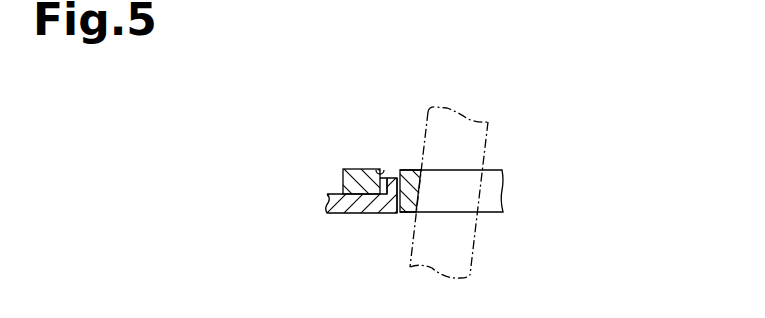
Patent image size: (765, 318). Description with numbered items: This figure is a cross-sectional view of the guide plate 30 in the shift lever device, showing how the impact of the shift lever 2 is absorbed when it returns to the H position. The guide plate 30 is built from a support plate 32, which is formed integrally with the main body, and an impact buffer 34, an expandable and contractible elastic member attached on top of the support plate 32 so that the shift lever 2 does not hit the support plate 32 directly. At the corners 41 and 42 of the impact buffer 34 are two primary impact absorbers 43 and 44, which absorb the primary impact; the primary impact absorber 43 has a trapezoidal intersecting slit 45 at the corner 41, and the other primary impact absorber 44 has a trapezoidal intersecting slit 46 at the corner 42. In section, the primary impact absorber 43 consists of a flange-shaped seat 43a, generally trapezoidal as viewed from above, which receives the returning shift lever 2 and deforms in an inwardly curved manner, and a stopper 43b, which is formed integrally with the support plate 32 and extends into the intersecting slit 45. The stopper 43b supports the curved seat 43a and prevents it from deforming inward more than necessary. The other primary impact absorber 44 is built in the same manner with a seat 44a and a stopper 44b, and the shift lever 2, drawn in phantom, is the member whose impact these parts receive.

The shift lever 2 is at (467, 117).
The guide plate 30 is at (346, 181).
The support plate 32 is at (333, 194).
The impact buffer 34 is at (350, 168).
The corner 41 is at (483, 208).
The corner 42 is at (418, 193).
The primary impact absorber 43 is at (339, 137).
The primary impact absorber 44 is at (339, 137).
The seat 43a is at (506, 175).
The seat 44a is at (422, 183).
The stopper 43b is at (449, 137).
The stopper 44b is at (390, 167).
The intersecting slit 45 is at (364, 137).
The intersecting slit 46 is at (378, 168).